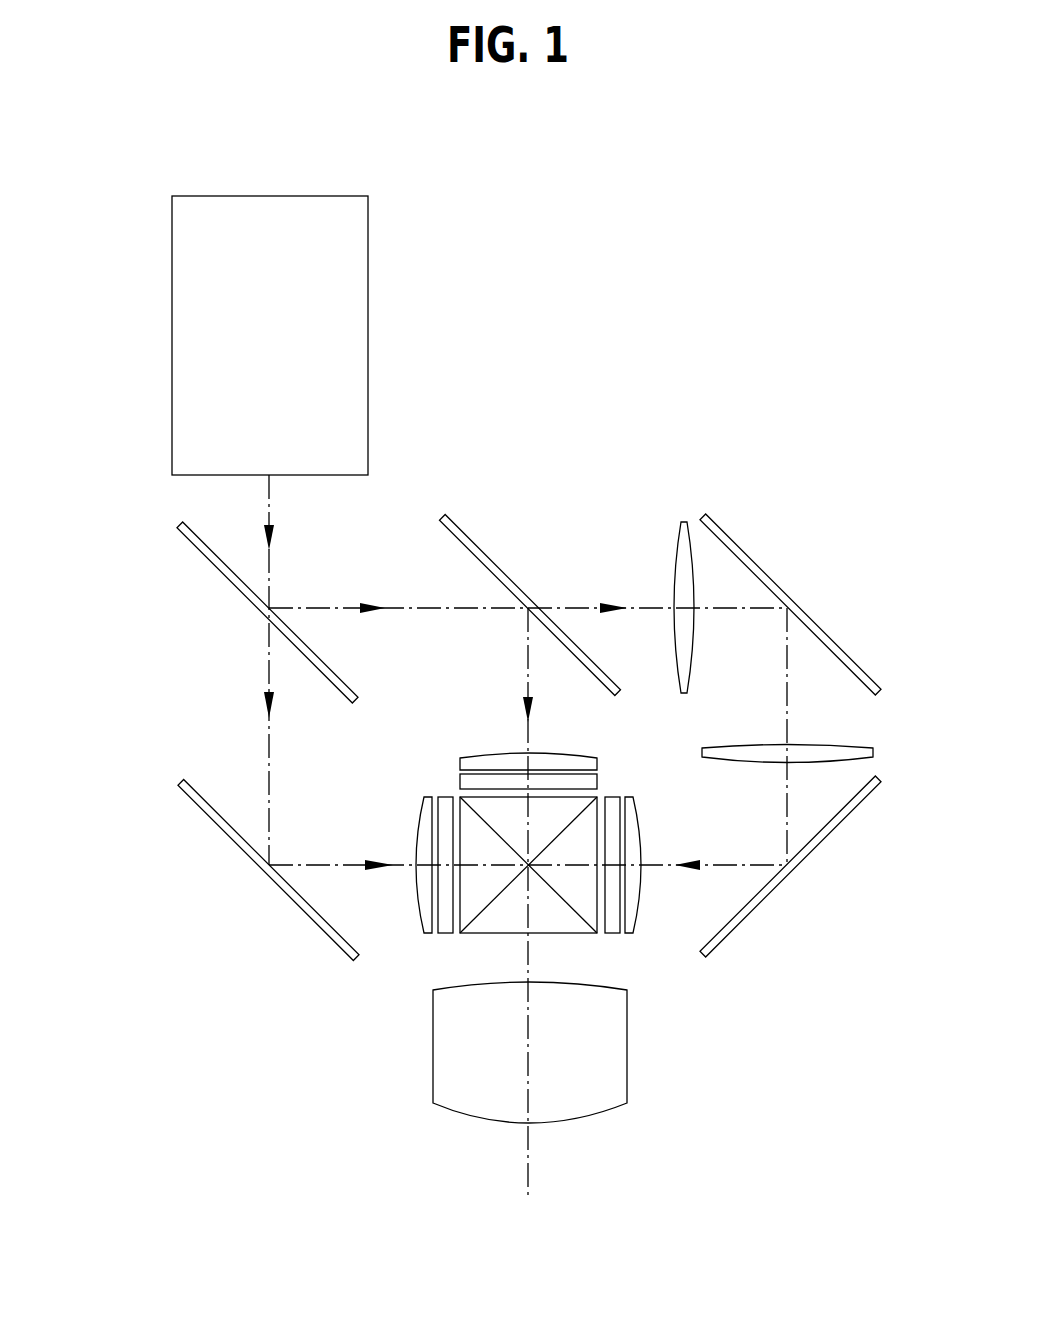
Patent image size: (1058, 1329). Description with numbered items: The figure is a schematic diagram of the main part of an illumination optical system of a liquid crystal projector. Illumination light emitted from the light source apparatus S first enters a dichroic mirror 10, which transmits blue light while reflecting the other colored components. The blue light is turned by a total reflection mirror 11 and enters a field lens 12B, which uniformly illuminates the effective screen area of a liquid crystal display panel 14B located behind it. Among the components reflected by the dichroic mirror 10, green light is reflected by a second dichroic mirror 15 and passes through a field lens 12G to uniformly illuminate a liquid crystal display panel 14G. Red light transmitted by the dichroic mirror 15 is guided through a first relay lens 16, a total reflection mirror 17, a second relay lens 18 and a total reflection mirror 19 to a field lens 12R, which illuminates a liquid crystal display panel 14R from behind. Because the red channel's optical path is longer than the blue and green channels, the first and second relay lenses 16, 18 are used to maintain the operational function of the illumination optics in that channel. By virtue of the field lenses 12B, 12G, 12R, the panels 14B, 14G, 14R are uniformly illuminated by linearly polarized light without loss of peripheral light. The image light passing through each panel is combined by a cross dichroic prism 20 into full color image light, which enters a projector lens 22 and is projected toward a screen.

The light source apparatus S is at (368, 296).
The dichroic mirror 10 is at (193, 547).
The total reflection mirror 11 is at (225, 837).
The dichroic mirror 15 is at (497, 562).
The first relay lens 16 is at (676, 546).
The total reflection mirror 17 is at (760, 565).
The second relay lens 18 is at (852, 746).
The total reflection mirror 19 is at (826, 840).
The field lens 12G is at (500, 752).
The field lens 12R is at (642, 822).
The field lens 12B is at (418, 842).
The liquid crystal display panel 14G is at (460, 781).
The liquid crystal display panel 14R is at (612, 797).
The liquid crystal display panel 14B is at (445, 935).
The cross dichroic prism 20 is at (570, 935).
The projector lens 22 is at (628, 1077).